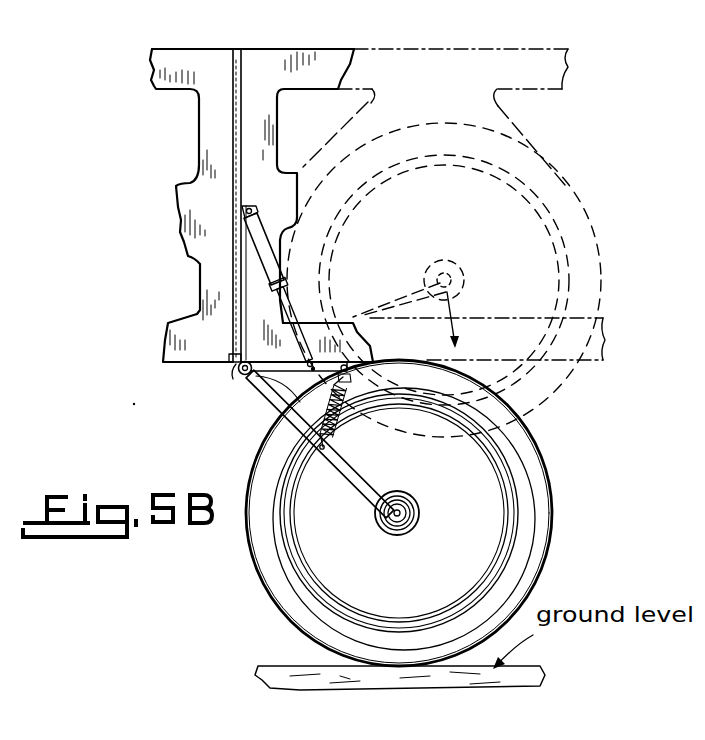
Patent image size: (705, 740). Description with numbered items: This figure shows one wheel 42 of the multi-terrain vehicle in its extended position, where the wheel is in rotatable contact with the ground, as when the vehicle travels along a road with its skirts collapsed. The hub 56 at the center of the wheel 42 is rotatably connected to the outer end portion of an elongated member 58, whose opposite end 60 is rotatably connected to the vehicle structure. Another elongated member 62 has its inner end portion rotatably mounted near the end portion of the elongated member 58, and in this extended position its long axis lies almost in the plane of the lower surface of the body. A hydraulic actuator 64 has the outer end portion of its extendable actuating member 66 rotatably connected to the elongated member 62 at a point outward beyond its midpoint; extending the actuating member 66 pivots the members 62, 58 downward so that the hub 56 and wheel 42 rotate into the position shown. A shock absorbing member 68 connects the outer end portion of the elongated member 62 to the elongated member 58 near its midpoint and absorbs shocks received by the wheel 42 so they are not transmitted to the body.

The wheel 42 is at (553, 503).
The hub 56 is at (418, 503).
The elongated member 58 is at (357, 473).
The opposite end 60 is at (235, 374).
The elongated member 62 is at (297, 357).
The hydraulic actuator 64 is at (293, 223).
The extendable actuating member 66 is at (292, 305).
The shock absorbing member 68 is at (340, 425).